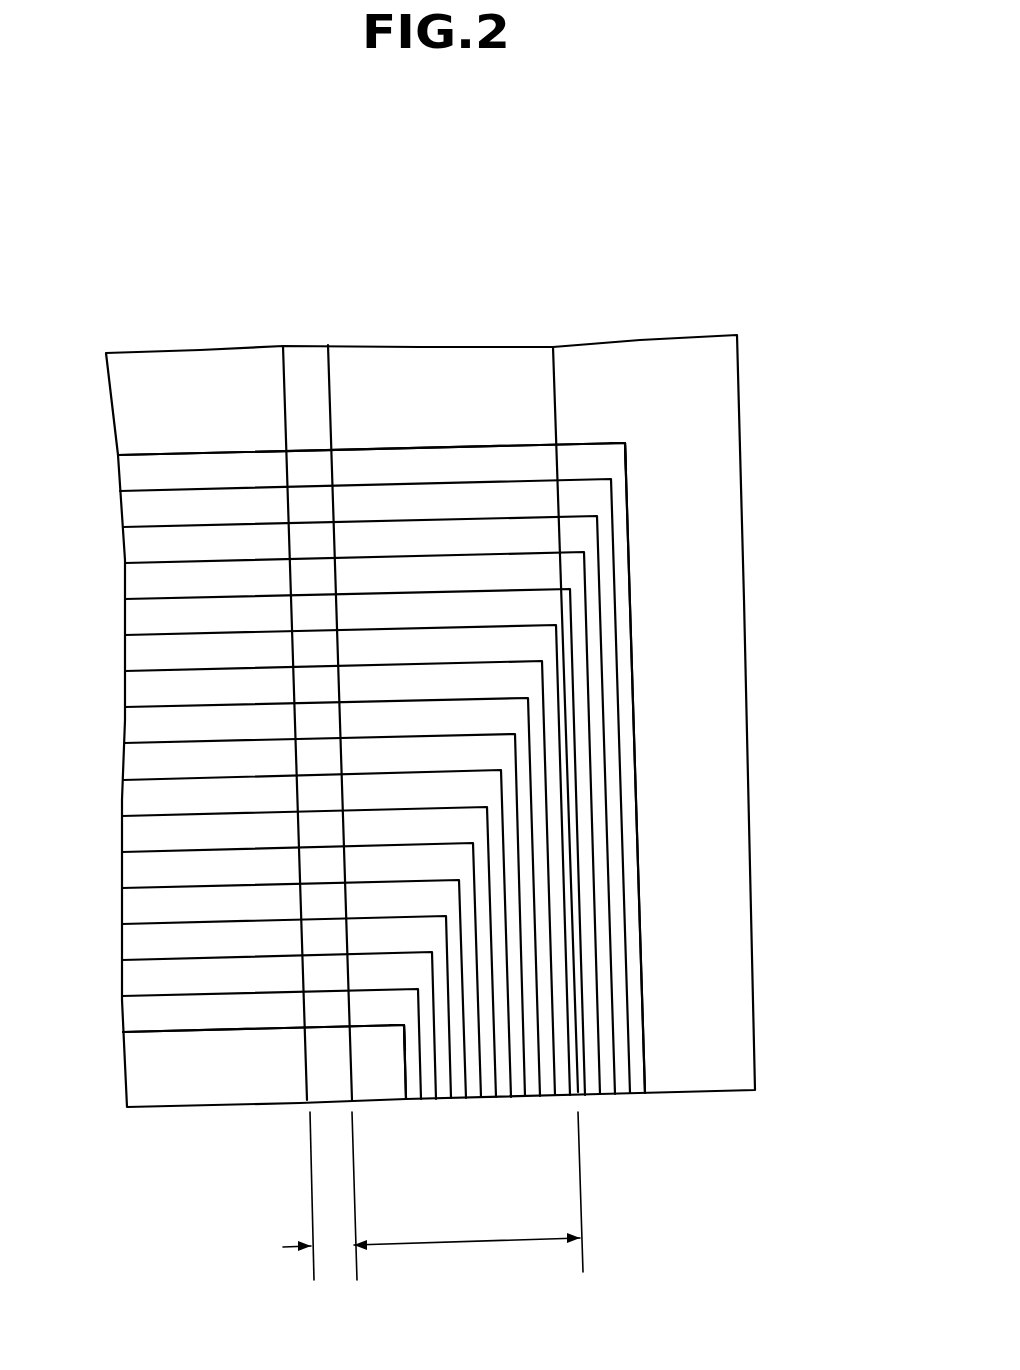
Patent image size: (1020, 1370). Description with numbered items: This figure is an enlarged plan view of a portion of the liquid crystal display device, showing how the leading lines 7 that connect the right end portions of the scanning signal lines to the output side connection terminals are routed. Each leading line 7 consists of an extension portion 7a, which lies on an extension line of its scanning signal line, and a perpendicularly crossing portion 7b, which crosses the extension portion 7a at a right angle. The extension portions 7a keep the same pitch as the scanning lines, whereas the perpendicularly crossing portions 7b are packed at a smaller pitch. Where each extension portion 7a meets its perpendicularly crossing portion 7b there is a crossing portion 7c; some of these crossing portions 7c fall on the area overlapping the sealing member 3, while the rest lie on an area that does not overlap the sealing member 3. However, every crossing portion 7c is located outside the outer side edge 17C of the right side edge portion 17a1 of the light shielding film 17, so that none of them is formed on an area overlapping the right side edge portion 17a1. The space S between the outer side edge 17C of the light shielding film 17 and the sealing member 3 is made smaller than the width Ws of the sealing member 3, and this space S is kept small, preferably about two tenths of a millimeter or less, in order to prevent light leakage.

The light shielding film 17 is at (121, 378).
The leading line 7 is at (155, 453).
The extension portion 7a is at (218, 453).
The perpendicularly crossing portion 7b is at (636, 820).
The crossing portion 7c is at (623, 440).
The right side edge portion 17a1 is at (273, 378).
The outer side edge 17C is at (287, 413).
The sealing member 3 is at (550, 327).
The space S is at (320, 1199).
The width of the sealing member Ws is at (468, 1199).